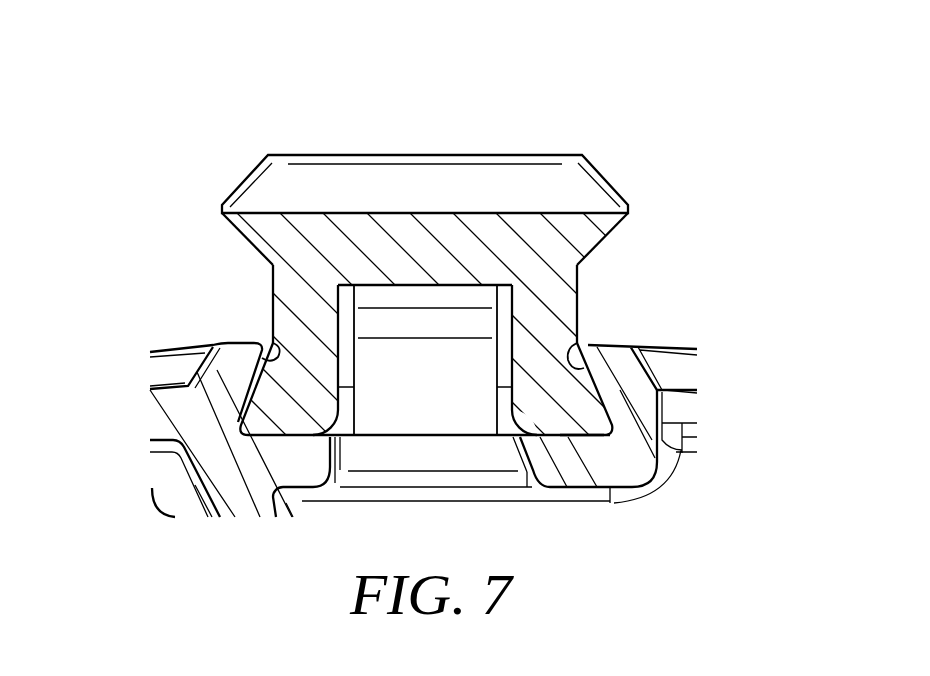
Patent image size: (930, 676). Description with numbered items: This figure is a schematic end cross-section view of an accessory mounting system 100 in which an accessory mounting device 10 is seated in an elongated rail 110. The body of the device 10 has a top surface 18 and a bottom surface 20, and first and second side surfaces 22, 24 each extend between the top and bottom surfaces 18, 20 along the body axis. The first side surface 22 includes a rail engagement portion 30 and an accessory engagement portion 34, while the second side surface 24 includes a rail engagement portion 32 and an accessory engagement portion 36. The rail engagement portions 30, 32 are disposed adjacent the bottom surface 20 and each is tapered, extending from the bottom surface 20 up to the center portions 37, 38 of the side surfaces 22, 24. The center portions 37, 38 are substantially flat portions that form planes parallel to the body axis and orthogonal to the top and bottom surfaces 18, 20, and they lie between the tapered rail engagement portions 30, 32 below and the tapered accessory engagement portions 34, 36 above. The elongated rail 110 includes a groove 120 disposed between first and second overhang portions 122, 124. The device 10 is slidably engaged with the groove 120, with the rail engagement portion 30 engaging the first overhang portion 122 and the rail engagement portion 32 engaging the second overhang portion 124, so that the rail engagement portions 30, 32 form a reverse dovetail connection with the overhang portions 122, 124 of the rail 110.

The accessory mounting system 100 is at (700, 50).
The accessory mounting device 10 is at (632, 132).
The top surface 18 is at (375, 123).
The accessory engagement portion 34 is at (233, 226).
The accessory engagement portion 36 is at (612, 232).
The center portion 37 is at (272, 281).
The center portion 38 is at (578, 284).
The first side surface 22 is at (118, 262).
The second side surface 24 is at (725, 288).
The elongated rail 110 is at (178, 345).
The first overhang portion 122 is at (270, 345).
The second overhang portion 124 is at (581, 347).
The rail engagement portion 30 is at (240, 408).
The rail engagement portion 32 is at (607, 400).
The groove 120 is at (266, 455).
The bottom surface 20 is at (583, 437).